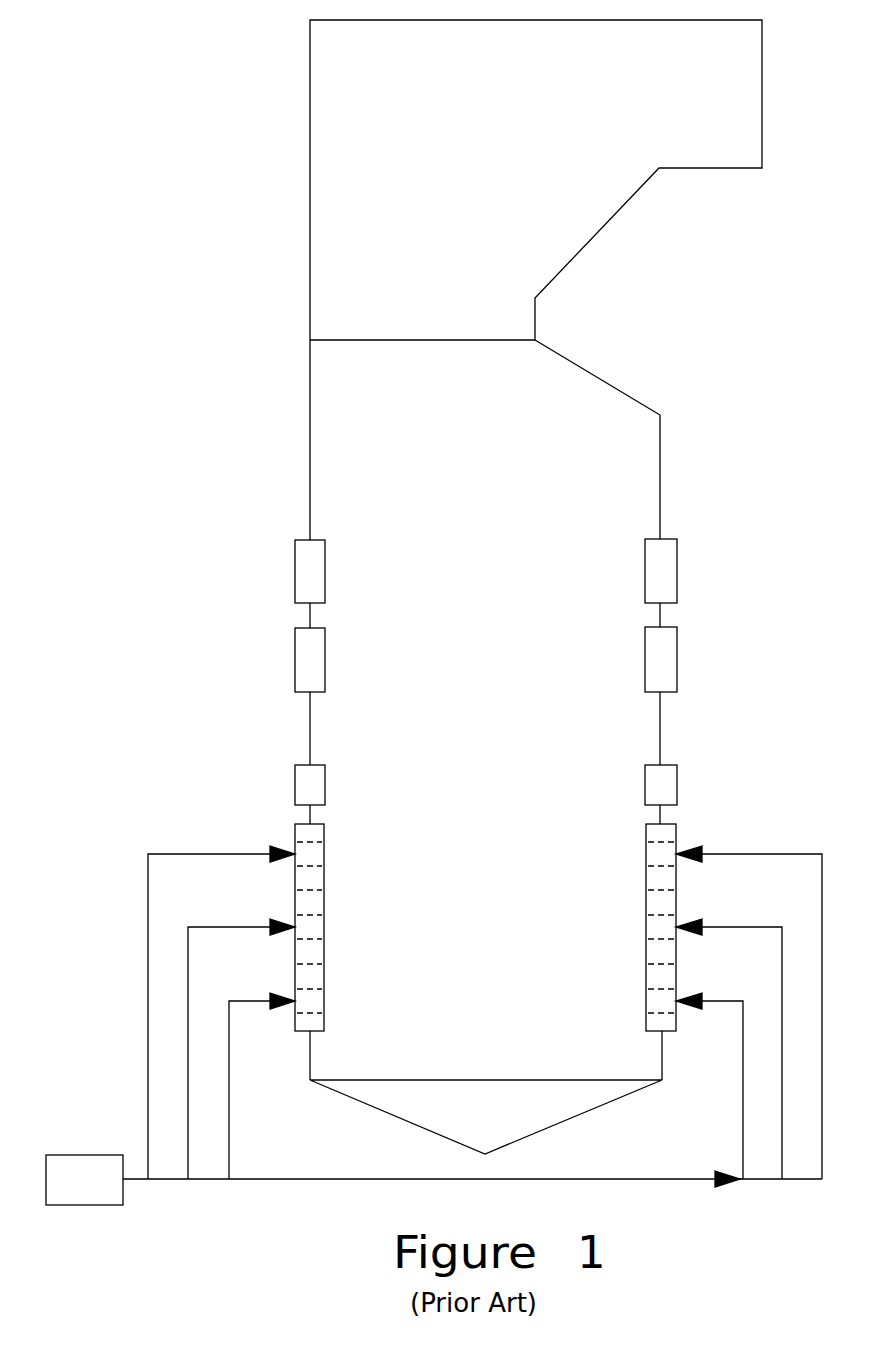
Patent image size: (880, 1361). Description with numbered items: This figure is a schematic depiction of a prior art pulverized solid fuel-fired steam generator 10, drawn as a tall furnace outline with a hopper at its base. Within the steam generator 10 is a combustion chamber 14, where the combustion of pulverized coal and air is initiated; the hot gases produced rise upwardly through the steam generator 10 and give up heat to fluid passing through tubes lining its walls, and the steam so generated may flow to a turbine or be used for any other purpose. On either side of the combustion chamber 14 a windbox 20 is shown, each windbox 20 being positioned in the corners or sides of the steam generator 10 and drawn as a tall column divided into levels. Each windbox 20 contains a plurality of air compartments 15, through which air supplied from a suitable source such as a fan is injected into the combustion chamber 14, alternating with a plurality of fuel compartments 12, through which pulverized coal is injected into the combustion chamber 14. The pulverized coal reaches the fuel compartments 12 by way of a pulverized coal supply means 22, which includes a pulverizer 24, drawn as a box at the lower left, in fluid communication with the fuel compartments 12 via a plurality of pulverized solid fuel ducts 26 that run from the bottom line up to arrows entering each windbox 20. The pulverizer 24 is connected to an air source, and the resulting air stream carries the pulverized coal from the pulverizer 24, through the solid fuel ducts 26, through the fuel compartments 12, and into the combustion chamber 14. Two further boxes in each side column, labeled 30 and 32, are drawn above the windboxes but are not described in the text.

The pulverized solid fuel-fired steam generator 10 is at (310, 356).
The fuel compartments 12 is at (324, 857).
The combustion chamber 14 is at (499, 1001).
The air compartments 15 is at (324, 877).
The windbox 20 is at (300, 1033).
The pulverized coal supply means 22 is at (308, 1179).
The pulverizer 24 is at (108, 1155).
The pulverized solid fuel ducts 26 is at (257, 850).
The economizer 30 is at (295, 666).
The air heater 32 is at (295, 568).